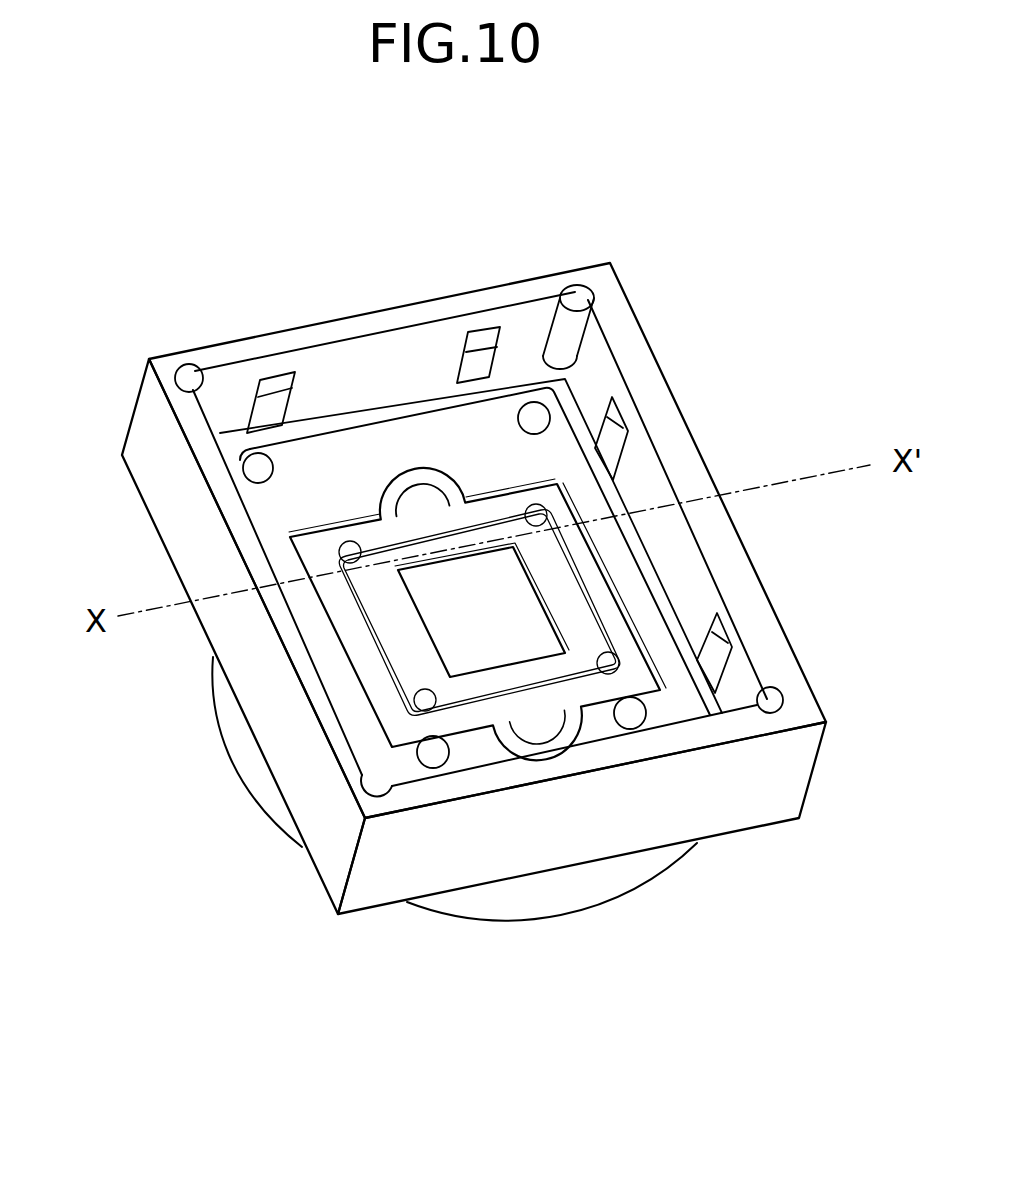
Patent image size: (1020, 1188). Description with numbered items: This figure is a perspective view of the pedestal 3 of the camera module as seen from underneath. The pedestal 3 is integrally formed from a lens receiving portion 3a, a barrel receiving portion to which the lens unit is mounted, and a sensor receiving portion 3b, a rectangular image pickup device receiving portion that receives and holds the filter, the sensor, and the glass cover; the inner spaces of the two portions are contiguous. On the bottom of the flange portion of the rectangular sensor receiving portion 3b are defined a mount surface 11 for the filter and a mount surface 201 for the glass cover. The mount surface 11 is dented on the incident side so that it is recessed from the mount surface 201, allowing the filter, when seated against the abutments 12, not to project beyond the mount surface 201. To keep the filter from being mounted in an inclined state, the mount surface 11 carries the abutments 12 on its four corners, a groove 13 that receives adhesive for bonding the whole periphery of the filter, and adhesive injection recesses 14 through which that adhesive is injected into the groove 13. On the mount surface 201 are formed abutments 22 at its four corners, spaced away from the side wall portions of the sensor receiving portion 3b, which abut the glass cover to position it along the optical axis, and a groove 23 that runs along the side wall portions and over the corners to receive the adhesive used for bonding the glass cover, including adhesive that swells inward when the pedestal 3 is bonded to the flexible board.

The pedestal 3 is at (528, 278).
The lens receiving portion 3a is at (235, 772).
The sensor receiving portion 3b is at (165, 485).
The mount surface for the filter 11 is at (460, 687).
The abutments 12 is at (690, 690).
The groove 13 is at (610, 632).
The adhesive injection recesses 14 is at (428, 495).
The abutments 22 is at (533, 412).
The groove 23 is at (608, 503).
The mount surface for the glass cover 201 is at (318, 470).